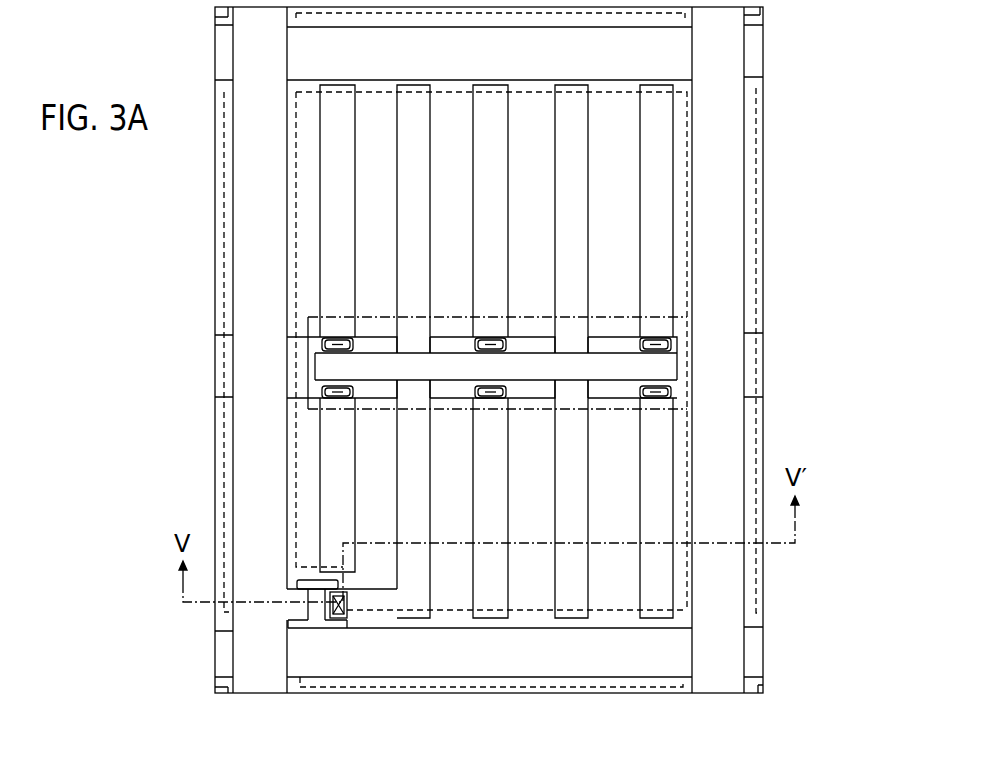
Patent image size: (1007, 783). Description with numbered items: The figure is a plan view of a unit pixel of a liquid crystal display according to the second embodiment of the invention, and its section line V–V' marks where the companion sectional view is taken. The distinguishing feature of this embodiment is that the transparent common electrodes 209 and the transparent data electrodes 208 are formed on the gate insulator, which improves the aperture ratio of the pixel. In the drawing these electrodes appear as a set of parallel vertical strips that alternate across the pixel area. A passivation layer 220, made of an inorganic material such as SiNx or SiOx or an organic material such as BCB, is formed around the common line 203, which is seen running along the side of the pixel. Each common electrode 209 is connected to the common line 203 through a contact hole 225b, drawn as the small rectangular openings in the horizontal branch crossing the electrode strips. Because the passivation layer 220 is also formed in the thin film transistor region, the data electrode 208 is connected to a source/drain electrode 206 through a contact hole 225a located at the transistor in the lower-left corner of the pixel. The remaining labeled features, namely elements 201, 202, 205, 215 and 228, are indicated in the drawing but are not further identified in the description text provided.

The substrate 201 is at (753, 654).
The gate pad region 202 is at (711, 681).
The common line 203 is at (750, 357).
The gate line 205 is at (320, 628).
The source/drain electrode 206 is at (292, 612).
The data electrode 208 is at (571, 602).
The common electrode 209 is at (483, 602).
The thin film transistor region 215 is at (300, 583).
The passivation layer 220 is at (652, 316).
The contact hole 225a is at (342, 628).
The contact hole 225b is at (323, 343).
The dummy pattern 228 is at (757, 432).